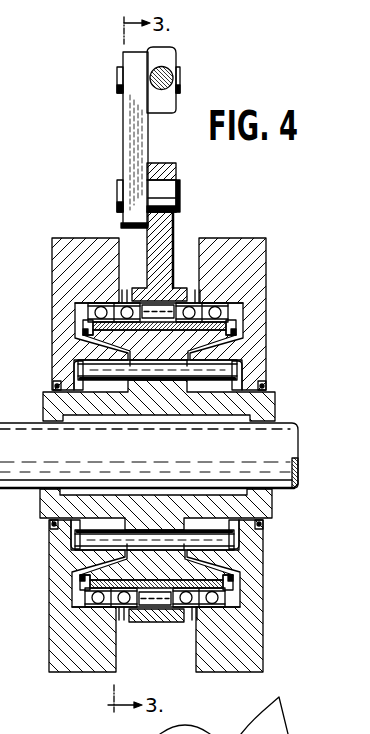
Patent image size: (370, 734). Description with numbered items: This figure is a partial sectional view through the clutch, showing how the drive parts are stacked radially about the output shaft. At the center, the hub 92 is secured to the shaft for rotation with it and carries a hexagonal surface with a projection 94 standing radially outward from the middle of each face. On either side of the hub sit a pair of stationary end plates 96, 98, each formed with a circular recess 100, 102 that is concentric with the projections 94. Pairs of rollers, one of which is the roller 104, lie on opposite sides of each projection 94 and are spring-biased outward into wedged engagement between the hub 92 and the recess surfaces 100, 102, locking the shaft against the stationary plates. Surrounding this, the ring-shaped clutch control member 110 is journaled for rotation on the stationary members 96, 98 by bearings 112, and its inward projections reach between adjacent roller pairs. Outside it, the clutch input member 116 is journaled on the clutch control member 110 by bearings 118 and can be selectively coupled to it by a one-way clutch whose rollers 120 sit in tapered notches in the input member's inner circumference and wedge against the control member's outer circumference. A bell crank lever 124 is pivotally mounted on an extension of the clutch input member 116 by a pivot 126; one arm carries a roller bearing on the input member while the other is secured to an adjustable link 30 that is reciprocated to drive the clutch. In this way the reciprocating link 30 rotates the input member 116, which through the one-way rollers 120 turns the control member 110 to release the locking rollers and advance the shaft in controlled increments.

The shaft assembly 30 is at (149, 386).
The hub 92 is at (43, 403).
The projection 94 is at (56, 384).
The stationary end plate 96 is at (52, 250).
The stationary end plate 98 is at (267, 272).
The circular recess 100 is at (75, 368).
The circular recess 102 is at (240, 372).
The roller 104 is at (223, 367).
The clutch control member 110 is at (92, 331).
The bearing 112 is at (100, 304).
The clutch input member 116 is at (166, 233).
The bearing 118 is at (124, 303).
The roller 120 is at (162, 304).
The bell crank lever 124 is at (123, 134).
The pivot 126 is at (172, 198).